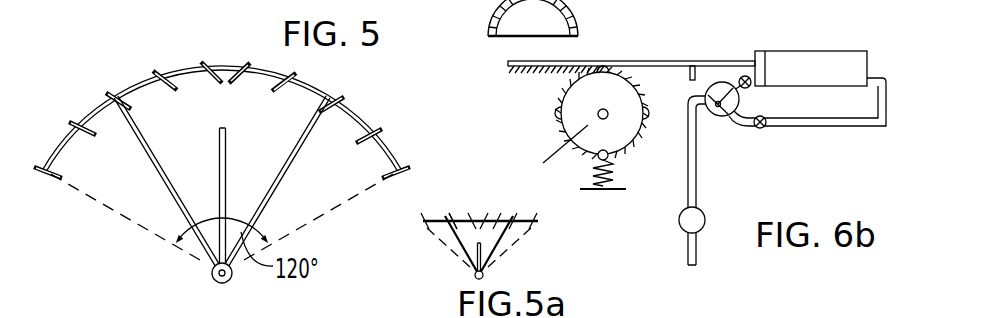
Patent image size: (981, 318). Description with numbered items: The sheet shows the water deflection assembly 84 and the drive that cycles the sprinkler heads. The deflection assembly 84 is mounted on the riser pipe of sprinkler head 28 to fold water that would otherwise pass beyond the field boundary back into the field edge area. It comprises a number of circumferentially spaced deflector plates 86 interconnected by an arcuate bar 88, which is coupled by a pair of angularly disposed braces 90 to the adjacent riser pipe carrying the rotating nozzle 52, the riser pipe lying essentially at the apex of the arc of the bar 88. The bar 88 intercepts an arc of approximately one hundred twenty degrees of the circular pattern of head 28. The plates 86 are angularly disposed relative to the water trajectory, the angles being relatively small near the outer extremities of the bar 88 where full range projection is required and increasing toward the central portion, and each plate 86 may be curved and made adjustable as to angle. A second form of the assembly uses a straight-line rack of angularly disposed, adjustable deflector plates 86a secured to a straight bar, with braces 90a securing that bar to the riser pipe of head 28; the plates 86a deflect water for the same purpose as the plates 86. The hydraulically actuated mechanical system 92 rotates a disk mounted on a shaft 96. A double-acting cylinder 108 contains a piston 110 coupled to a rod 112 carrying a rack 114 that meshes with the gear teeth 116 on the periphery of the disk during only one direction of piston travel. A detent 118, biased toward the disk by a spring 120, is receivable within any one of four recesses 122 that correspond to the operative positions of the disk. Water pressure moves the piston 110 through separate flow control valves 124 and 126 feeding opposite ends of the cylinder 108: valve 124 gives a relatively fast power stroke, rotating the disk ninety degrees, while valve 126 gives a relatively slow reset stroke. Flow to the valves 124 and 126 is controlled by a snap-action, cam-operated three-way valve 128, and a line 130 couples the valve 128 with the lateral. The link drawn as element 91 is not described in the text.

In FIG. 5, the water deflection assembly 84 is at (356, 105).
In FIG. 5, the deflector plates 86 is at (80, 125).
In FIG. 5, the arcuate bar 88 is at (208, 68).
In FIG. 5A, the arcuate bar 88 is at (437, 227).
In FIG. 5, the nozzle 52 is at (230, 147).
In FIG. 5, the braces 90 is at (157, 165).
In FIG. 5, the sprinkler head 28 is at (236, 172).
In FIG. 5A, the sprinkler head 28 is at (499, 256).
In FIG. 5A, the deflector plates 86a is at (520, 221).
In FIG. 5A, the braces 90a is at (462, 242).
In FIG. 6B, the hydraulically actuated mechanical system 92 is at (633, 50).
In FIG. 6B, the rack 114 is at (510, 66).
In FIG. 6B, the gear teeth 116 is at (639, 83).
In FIG. 6B, the rod 112 is at (683, 62).
In FIG. 6B, the shaft 96 is at (598, 112).
In FIG. 6B, the recesses 122 is at (560, 110).
In FIG. 6B, the detent 118 is at (613, 136).
In FIG. 6B, the lever link 91 is at (559, 160).
In FIG. 6B, the spring 120 is at (613, 176).
In FIG. 6B, the double-acting cylinder 108 is at (814, 51).
In FIG. 6B, the piston 110 is at (766, 60).
In FIG. 6B, the flow control valve 124 is at (751, 87).
In FIG. 6B, the flow control valve 126 is at (761, 129).
In FIG. 6B, the three-way valve 128 is at (718, 118).
In FIG. 6B, the line 130 is at (683, 212).